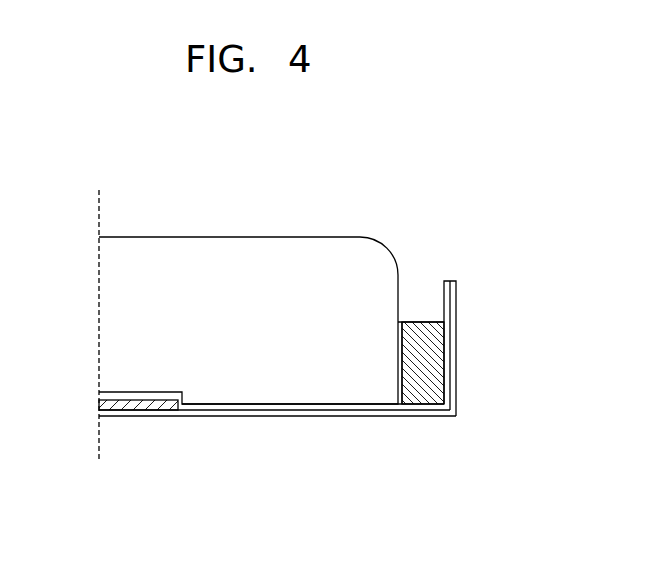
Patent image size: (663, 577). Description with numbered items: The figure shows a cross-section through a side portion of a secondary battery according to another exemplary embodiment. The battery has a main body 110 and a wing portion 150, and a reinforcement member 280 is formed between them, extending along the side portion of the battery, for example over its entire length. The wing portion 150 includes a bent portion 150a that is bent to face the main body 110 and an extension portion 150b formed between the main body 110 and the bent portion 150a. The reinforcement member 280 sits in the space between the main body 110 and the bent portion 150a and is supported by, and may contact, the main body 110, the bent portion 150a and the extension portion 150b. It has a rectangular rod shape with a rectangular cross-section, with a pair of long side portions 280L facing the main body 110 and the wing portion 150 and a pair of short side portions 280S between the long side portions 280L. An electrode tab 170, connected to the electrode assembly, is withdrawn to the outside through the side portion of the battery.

The main body 110 is at (233, 252).
The wing portion 150 is at (327, 327).
The bent portion 150a is at (457, 350).
The extension portion 150b is at (428, 413).
The electrode tab 170 is at (134, 407).
The reinforcement member 280 is at (420, 330).
The long side portions 280L is at (399, 370).
The short side portions 280S is at (417, 405).